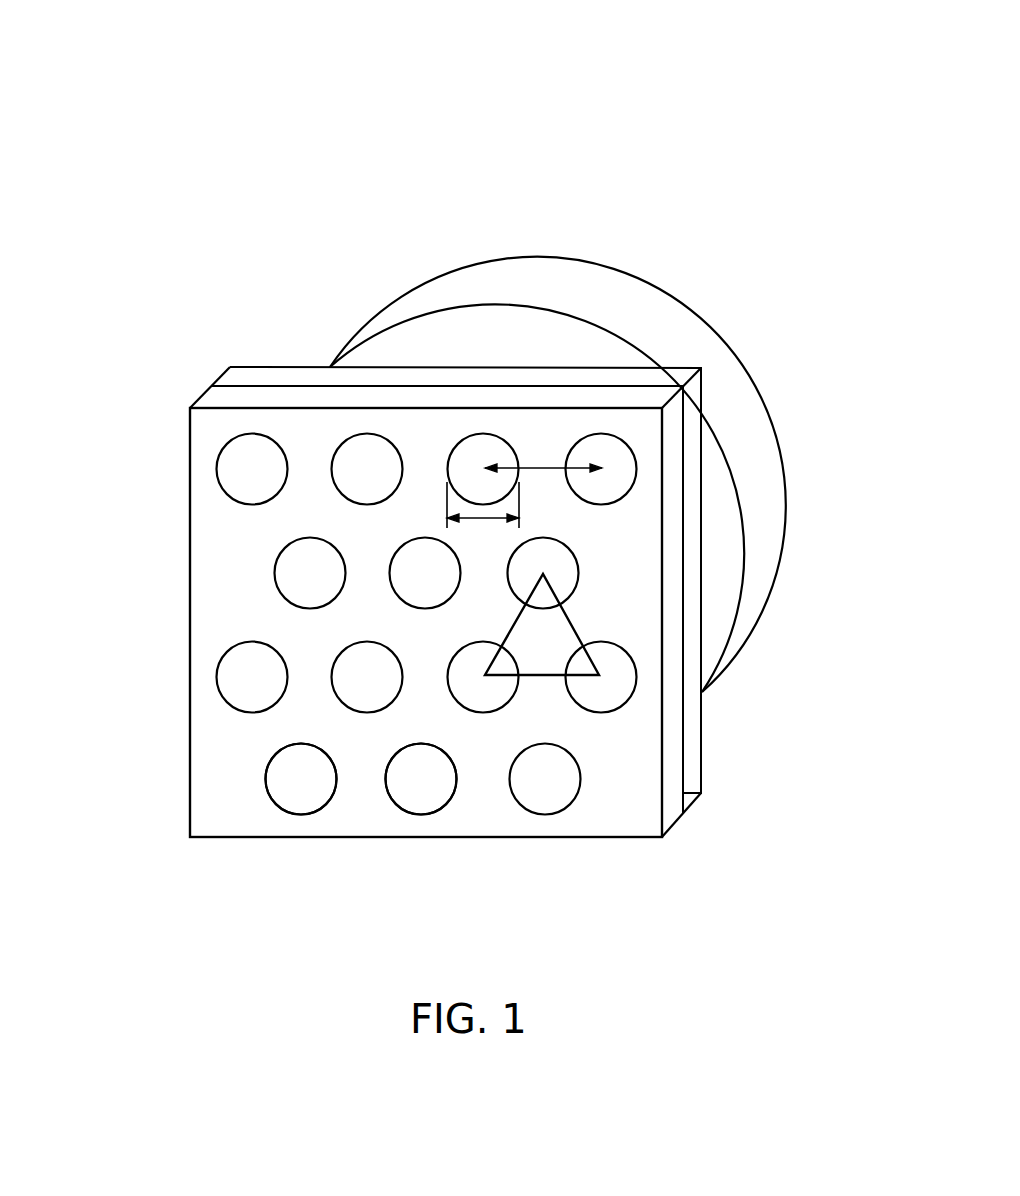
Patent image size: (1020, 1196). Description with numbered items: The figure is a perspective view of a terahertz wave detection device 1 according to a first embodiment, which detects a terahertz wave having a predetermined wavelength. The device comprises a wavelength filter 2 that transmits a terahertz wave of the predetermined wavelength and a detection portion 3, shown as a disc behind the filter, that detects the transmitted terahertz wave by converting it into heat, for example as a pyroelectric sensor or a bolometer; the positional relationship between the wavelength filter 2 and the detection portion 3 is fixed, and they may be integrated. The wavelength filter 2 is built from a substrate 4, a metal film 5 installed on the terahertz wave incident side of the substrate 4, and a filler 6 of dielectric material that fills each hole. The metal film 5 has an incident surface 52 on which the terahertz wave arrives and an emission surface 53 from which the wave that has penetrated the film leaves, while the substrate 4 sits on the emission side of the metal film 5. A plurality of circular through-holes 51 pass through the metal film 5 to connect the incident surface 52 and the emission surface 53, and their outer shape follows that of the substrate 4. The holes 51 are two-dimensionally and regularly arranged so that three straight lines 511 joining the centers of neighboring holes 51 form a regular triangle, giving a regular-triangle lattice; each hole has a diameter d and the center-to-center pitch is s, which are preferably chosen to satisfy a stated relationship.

The terahertz wave detection device 1 is at (687, 125).
The wavelength filter 2 is at (176, 560).
The detection portion 3 is at (763, 585).
The substrate 4 is at (692, 763).
The metal film 5 is at (469, 580).
The hole 51 is at (268, 797).
The straight line 511 is at (572, 622).
The incident surface 52 is at (632, 815).
The emission surface 53 is at (702, 793).
The filler 6 is at (462, 462).